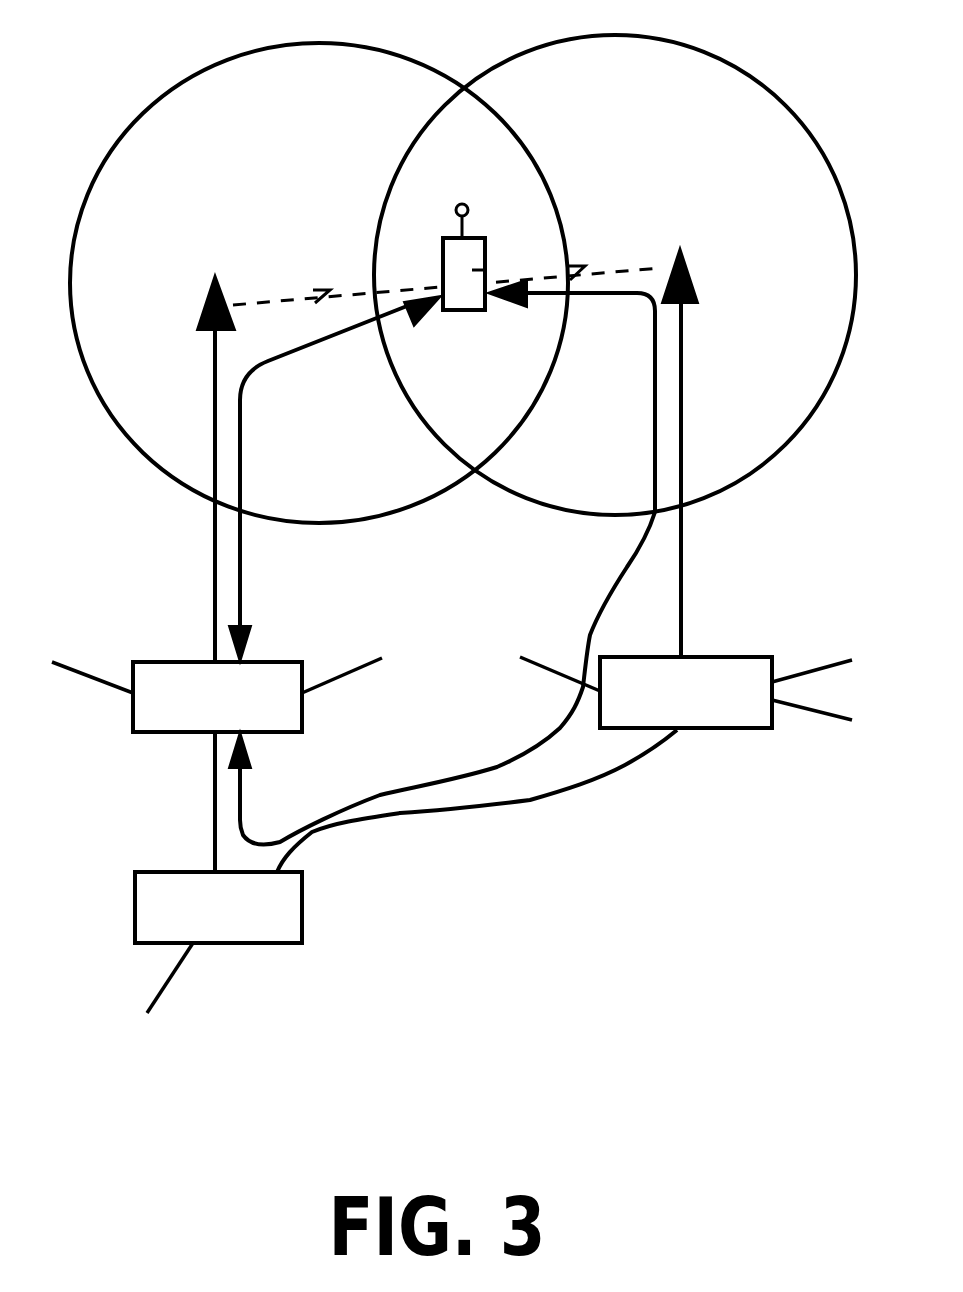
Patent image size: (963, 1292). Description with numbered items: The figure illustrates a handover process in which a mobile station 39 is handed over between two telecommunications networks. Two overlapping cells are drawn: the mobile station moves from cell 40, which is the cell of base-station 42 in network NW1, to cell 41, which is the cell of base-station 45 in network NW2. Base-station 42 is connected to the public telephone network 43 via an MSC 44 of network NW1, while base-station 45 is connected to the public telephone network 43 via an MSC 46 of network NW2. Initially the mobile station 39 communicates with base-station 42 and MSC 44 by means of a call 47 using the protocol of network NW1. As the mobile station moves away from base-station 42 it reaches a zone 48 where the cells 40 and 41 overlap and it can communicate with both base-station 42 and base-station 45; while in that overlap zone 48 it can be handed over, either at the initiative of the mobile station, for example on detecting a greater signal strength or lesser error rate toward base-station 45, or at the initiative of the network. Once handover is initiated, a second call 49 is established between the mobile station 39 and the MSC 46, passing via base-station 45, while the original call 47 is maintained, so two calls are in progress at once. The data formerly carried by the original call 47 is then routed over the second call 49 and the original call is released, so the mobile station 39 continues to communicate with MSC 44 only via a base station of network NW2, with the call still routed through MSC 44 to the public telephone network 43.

The mobile station 39 is at (486, 262).
The cell 40 is at (230, 160).
The cell 41 is at (670, 155).
The base-station 42 is at (212, 304).
The public telephone network 43 is at (135, 908).
The MSC 44 is at (135, 718).
The base-station 45 is at (697, 288).
The MSC 46 is at (745, 730).
The call 47 is at (293, 357).
The zone 48 is at (452, 418).
The second call 49 is at (627, 298).